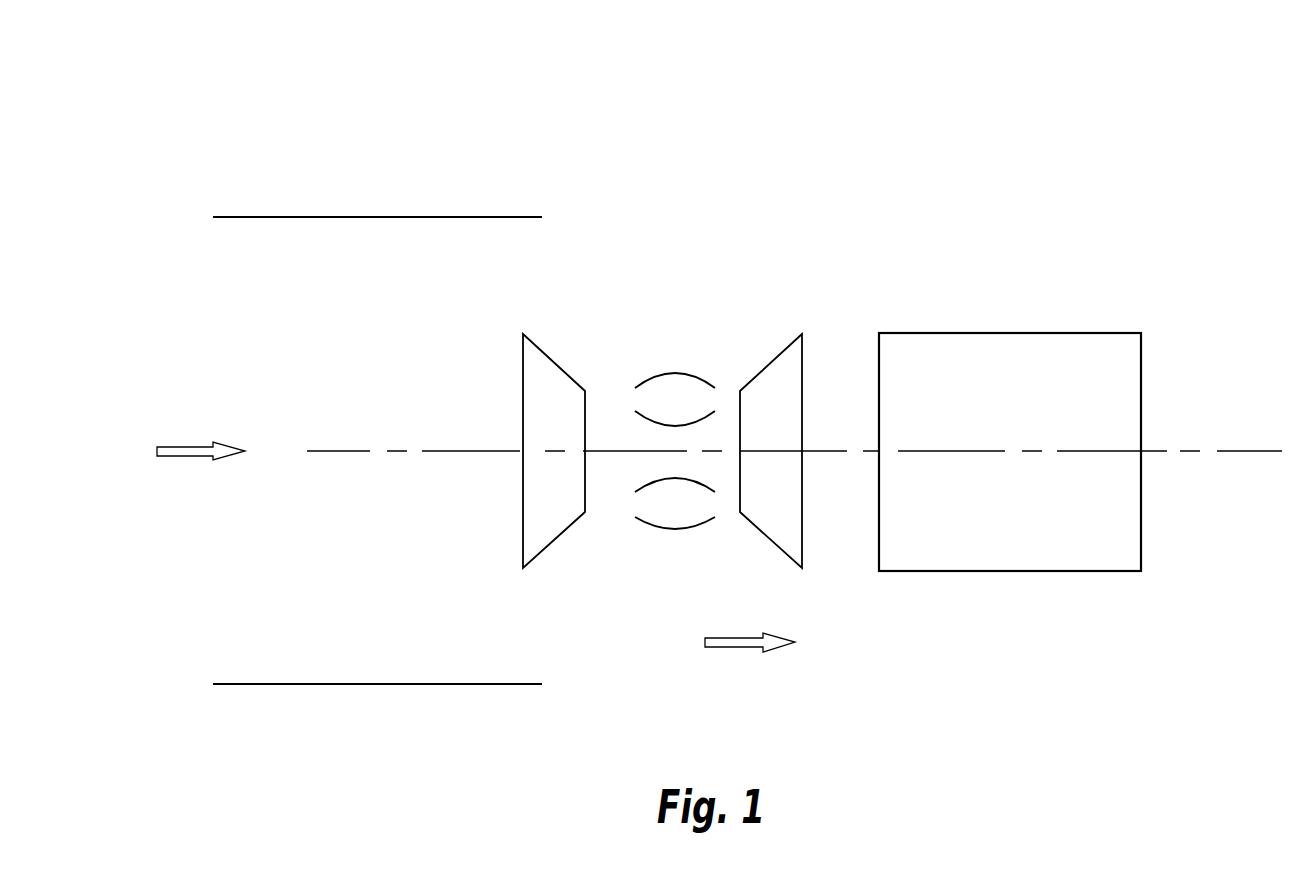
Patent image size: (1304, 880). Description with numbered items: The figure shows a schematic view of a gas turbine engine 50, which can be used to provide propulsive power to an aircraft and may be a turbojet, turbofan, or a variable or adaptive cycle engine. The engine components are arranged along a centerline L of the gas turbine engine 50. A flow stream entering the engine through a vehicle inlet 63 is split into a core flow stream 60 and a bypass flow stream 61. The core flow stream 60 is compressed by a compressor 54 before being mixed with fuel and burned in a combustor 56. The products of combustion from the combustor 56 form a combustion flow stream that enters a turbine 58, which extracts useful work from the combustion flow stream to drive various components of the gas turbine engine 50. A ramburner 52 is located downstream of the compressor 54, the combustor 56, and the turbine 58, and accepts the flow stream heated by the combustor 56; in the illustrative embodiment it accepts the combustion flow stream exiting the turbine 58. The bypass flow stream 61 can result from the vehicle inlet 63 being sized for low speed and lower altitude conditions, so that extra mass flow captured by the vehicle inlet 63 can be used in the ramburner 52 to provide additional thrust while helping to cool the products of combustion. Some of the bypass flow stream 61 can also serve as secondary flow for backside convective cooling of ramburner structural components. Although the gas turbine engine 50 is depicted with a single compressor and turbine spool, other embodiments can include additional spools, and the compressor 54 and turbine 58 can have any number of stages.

The gas turbine engine 50 is at (815, 99).
The ramburner 52 is at (1073, 276).
The compressor 54 is at (572, 296).
The combustor 56 is at (675, 320).
The turbine 58 is at (828, 265).
The core flow stream 60 is at (184, 447).
The bypass flow stream 61 is at (738, 648).
The vehicle inlet 63 is at (401, 685).
The centerline L is at (1255, 451).